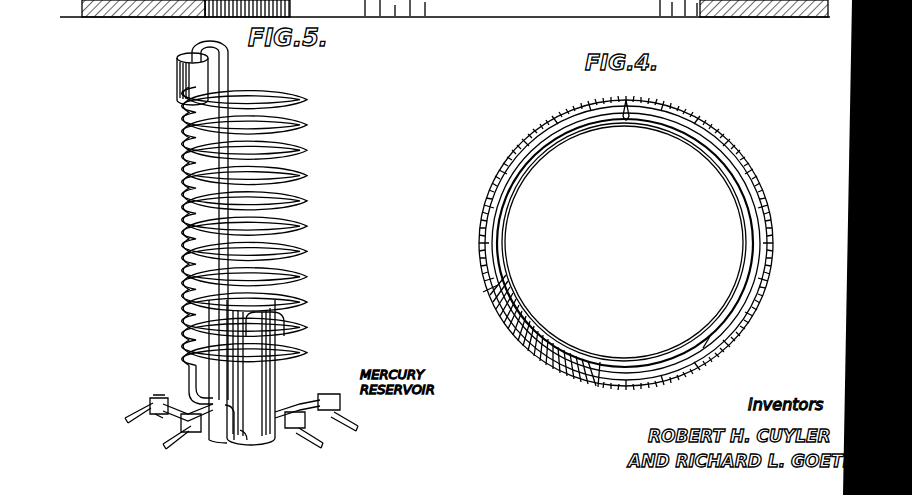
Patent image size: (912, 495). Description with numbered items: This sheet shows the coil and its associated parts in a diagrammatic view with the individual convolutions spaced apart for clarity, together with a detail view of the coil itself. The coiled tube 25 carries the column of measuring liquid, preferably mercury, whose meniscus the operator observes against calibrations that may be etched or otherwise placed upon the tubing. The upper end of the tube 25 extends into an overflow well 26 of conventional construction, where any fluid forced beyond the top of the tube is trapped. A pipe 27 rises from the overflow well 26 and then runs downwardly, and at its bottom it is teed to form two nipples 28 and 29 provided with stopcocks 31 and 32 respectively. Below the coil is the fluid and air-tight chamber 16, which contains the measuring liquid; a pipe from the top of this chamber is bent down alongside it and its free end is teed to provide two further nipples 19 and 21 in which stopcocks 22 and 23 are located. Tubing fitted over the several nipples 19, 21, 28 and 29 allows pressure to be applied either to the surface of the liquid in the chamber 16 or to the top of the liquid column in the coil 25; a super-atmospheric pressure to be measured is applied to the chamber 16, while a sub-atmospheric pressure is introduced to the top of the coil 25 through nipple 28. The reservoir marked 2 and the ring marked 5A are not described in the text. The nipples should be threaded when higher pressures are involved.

In FIG. 5, the mercury reservoir 2 is at (352, 373).
In FIG. 5, the fluid and air-tight chamber 16 is at (253, 446).
In FIG. 5, the nipple 19 is at (358, 419).
In FIG. 5, the nipple 21 is at (337, 460).
In FIG. 5, the stopcock 22 is at (333, 402).
In FIG. 5, the stopcock 23 is at (299, 421).
In FIG. 5, the tube 25 is at (305, 283).
In FIG. 5, the overflow well 26 is at (182, 92).
In FIG. 5, the pipe 27 is at (190, 147).
In FIG. 5, the nipple 28 is at (141, 407).
In FIG. 5, the nipple 29 is at (179, 446).
In FIG. 5, the stopcock 31 is at (156, 396).
In FIG. 5, the stopcock 32 is at (214, 440).
In FIG. 4, the graduated ring 5A is at (512, 150).